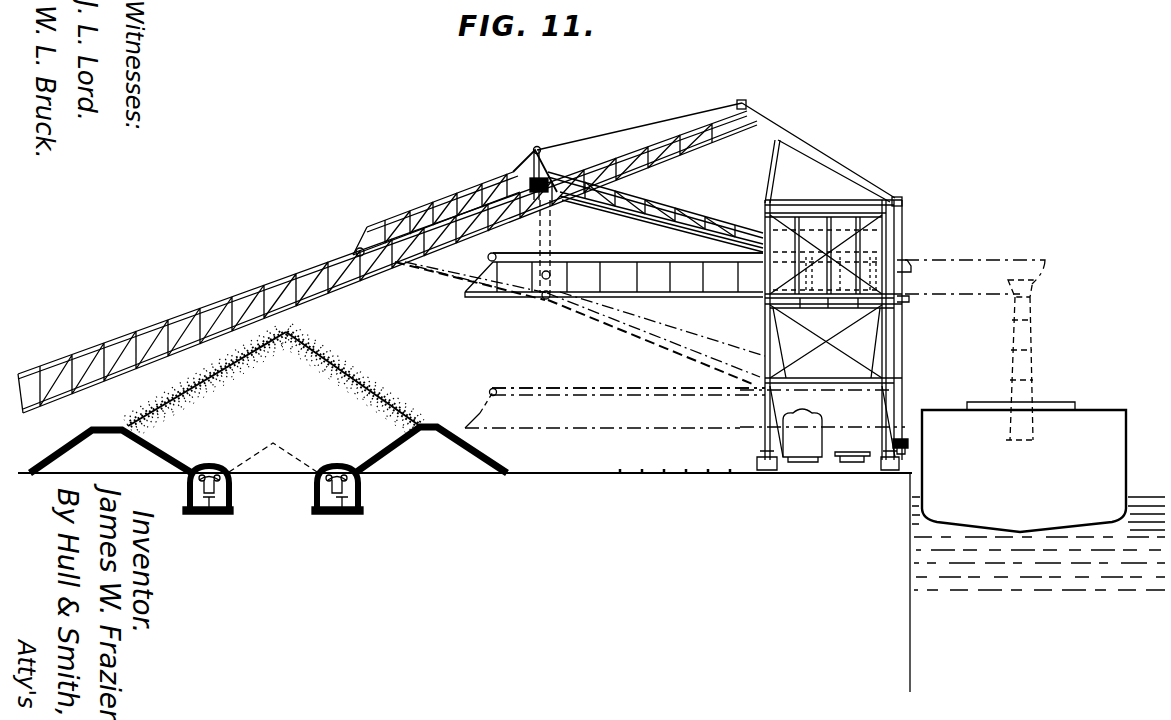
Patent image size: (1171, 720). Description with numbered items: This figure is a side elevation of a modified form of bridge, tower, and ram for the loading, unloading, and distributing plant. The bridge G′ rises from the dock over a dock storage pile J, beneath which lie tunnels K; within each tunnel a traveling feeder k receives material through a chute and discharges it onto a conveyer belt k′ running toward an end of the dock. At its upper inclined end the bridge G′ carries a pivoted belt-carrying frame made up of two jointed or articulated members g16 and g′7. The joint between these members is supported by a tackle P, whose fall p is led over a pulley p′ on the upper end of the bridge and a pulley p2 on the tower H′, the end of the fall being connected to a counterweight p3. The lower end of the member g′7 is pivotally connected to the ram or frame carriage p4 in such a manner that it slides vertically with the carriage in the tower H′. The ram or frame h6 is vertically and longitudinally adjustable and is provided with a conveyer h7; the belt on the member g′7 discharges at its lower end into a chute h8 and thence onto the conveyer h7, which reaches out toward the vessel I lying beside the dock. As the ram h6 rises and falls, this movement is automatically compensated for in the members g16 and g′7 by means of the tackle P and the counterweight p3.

The bridge G′ is at (250, 293).
The jointed member of belt-carrying frame g16 is at (428, 205).
The tackle P is at (534, 152).
The fall p is at (620, 124).
The pulley p′ is at (746, 101).
The pulley p2 is at (900, 200).
The counterweight p3 is at (907, 443).
The ram or frame carriage p4 is at (840, 306).
The tower H′ is at (893, 238).
The ram or frame h6 is at (722, 284).
The conveyer h7 is at (632, 262).
The chute h8 is at (769, 247).
The jointed member of belt-carrying frame g′7 is at (690, 213).
The vessel I is at (1015, 396).
The dock storage pile J is at (268, 398).
The tunnels K is at (320, 490).
The traveling feeder k is at (200, 490).
The conveyer belts k′ is at (208, 510).